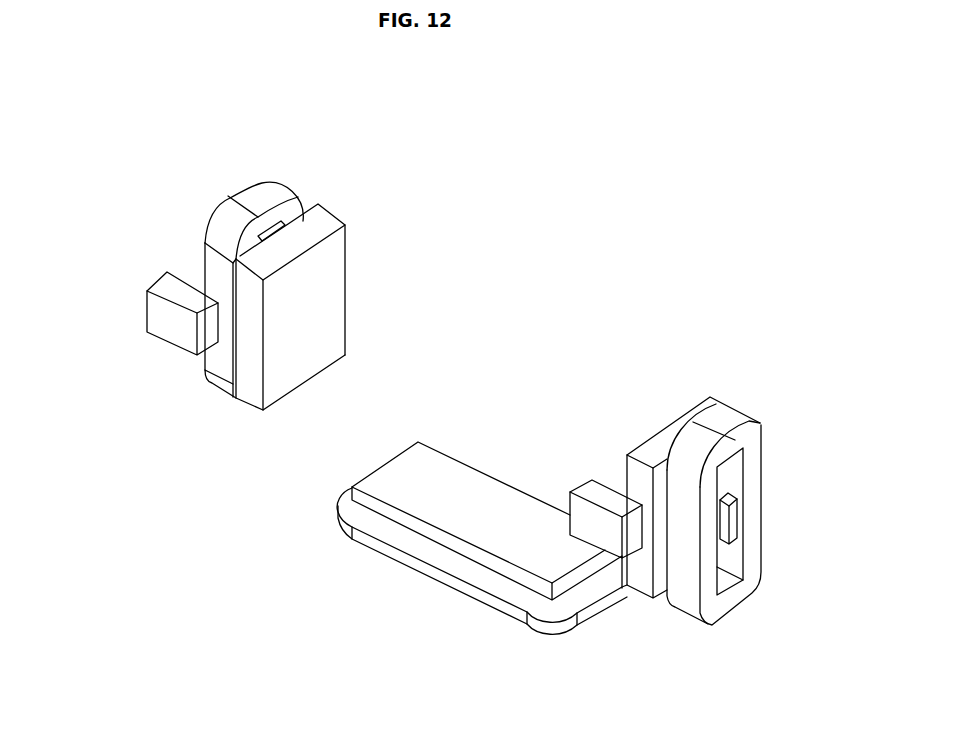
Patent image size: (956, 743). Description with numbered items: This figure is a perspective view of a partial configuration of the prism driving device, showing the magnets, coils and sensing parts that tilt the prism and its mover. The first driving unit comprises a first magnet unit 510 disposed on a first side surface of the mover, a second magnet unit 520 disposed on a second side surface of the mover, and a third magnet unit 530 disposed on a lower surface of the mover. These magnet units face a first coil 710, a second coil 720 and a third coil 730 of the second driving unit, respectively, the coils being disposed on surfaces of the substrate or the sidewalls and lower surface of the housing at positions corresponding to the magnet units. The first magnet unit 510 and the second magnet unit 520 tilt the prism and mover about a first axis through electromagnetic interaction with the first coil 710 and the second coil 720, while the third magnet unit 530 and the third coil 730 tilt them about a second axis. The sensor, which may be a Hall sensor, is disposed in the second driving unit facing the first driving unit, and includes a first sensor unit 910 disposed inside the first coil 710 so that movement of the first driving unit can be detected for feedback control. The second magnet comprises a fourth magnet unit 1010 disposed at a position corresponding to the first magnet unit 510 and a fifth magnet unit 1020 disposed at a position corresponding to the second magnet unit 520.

The first magnet unit 510 is at (685, 410).
The second magnet unit 520 is at (345, 243).
The third magnet unit 530 is at (458, 467).
The first coil 710 is at (757, 447).
The second coil 720 is at (250, 193).
The third coil 730 is at (402, 562).
The first sensor unit 910 is at (734, 517).
The fourth magnet unit 1010 is at (593, 483).
The fifth magnet unit 1020 is at (160, 319).